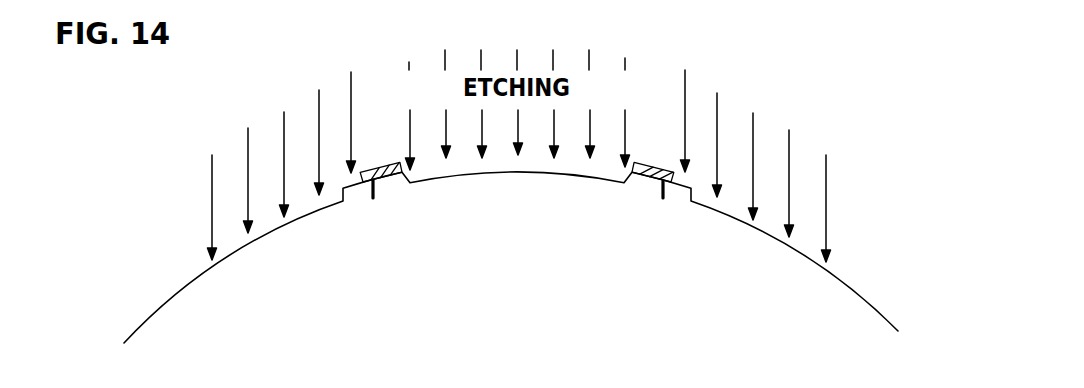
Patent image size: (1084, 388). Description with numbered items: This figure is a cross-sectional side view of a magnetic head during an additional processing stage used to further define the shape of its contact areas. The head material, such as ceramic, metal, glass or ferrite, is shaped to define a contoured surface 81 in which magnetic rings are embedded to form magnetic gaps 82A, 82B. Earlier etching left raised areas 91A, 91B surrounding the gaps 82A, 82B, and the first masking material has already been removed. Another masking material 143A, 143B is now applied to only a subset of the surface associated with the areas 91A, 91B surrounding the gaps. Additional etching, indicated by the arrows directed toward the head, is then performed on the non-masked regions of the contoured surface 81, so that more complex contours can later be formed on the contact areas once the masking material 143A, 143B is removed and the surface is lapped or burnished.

The contoured surface 81 is at (185, 287).
The magnetic gap 82A is at (370, 198).
The magnetic gap 82B is at (660, 198).
The area surrounding gap 91A is at (393, 200).
The area surrounding gap 91B is at (684, 207).
The masking material 143A is at (381, 165).
The masking material 143B is at (658, 163).